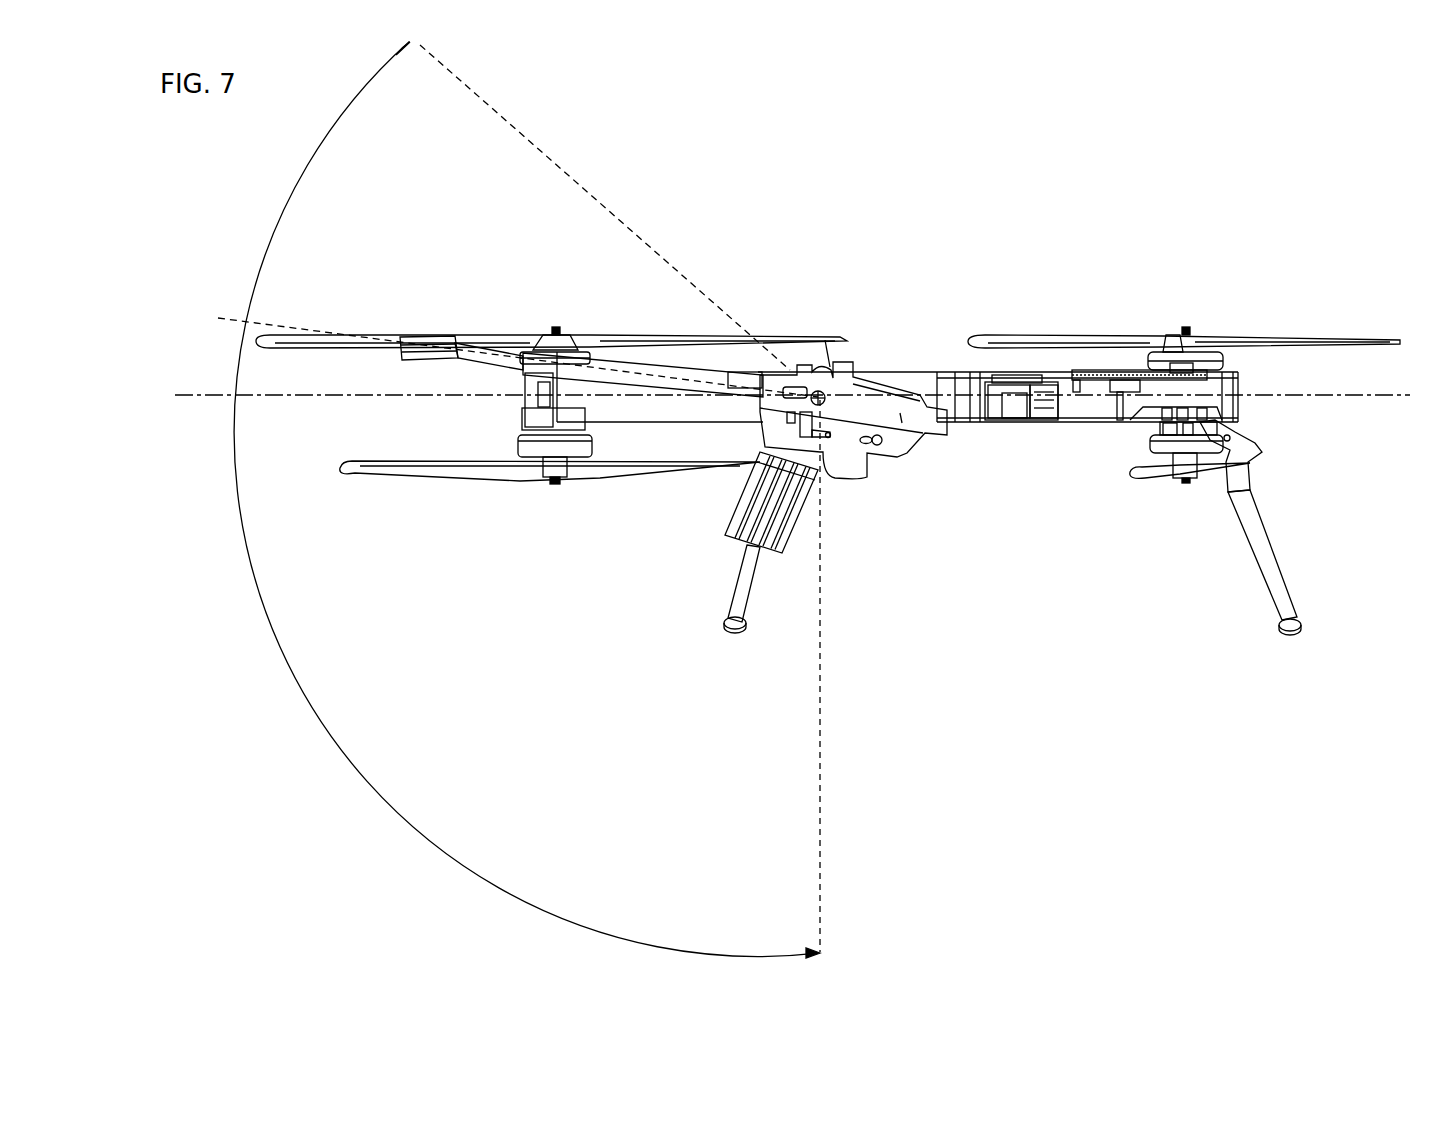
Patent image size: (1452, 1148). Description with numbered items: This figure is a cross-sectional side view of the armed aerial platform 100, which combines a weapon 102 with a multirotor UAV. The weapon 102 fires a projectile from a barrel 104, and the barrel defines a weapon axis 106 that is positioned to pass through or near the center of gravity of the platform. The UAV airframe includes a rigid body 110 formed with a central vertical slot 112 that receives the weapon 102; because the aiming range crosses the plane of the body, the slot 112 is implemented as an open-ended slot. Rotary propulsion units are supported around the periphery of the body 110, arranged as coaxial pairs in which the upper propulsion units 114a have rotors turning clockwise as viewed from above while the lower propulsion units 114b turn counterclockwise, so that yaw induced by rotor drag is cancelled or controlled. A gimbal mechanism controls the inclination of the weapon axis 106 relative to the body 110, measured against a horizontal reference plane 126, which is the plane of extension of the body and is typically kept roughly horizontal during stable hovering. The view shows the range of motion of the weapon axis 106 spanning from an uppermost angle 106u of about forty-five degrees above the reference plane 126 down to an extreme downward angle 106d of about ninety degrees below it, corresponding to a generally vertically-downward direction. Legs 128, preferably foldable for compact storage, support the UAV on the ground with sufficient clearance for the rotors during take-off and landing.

The armed aerial platform 100 is at (1110, 212).
The weapon 102 is at (860, 377).
The barrel 104 is at (640, 365).
The weapon axis 106 is at (238, 318).
The uppermost angle 106u is at (630, 233).
The extreme downward angle 106d is at (822, 778).
The rigid body 110 is at (1062, 420).
The central vertical slot 112 is at (740, 377).
The upper propulsion units 114a is at (547, 347).
The lower propulsion units 114b is at (545, 456).
The horizontal reference plane 126 is at (1362, 398).
The legs 128 is at (738, 600).